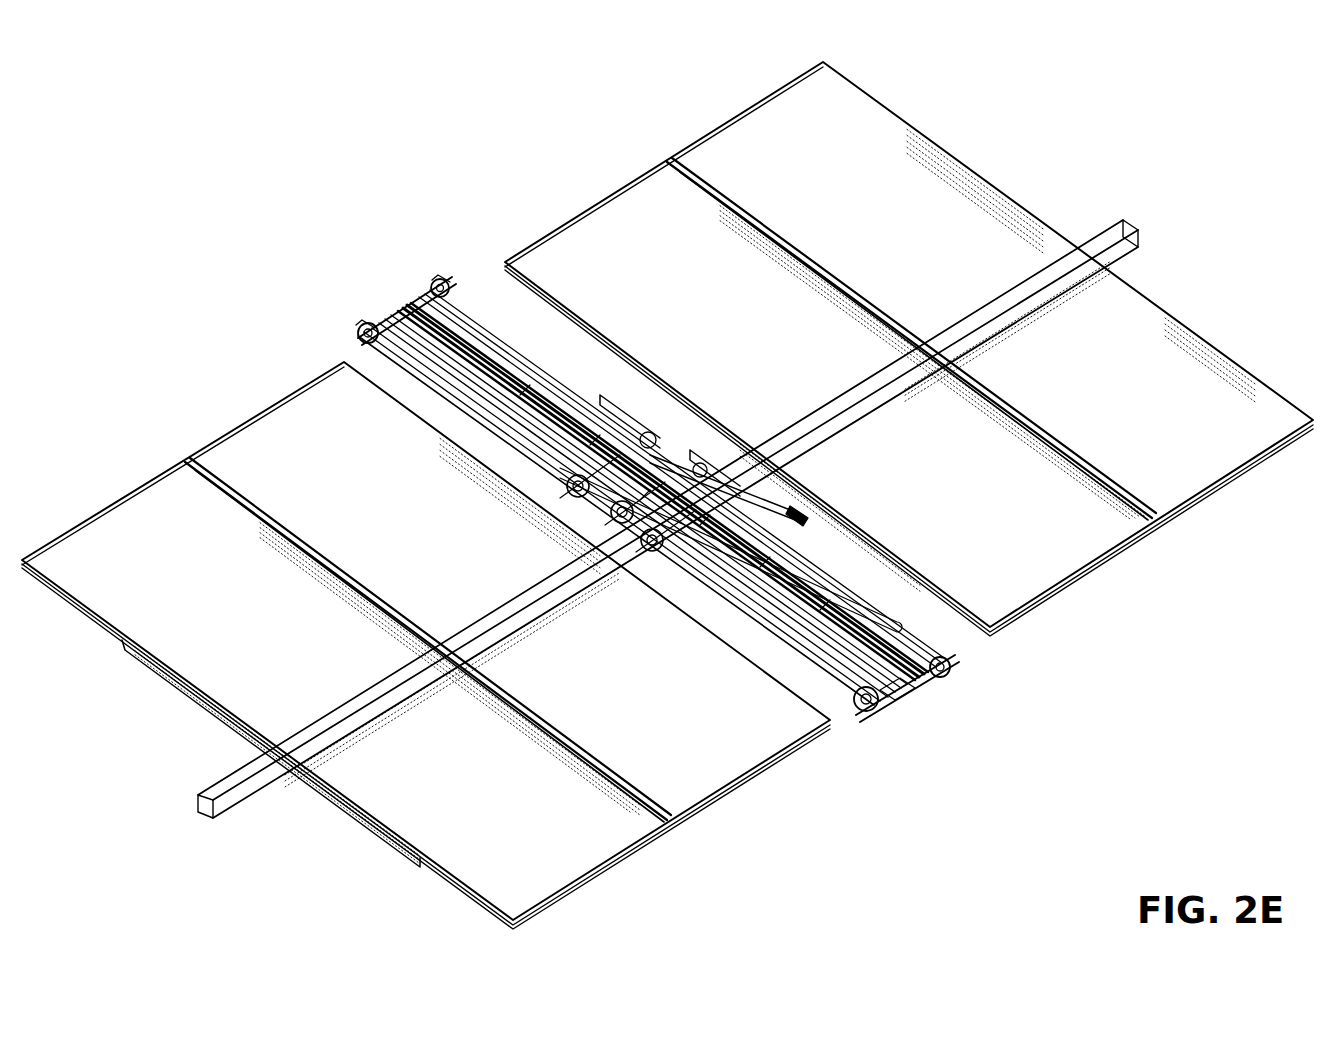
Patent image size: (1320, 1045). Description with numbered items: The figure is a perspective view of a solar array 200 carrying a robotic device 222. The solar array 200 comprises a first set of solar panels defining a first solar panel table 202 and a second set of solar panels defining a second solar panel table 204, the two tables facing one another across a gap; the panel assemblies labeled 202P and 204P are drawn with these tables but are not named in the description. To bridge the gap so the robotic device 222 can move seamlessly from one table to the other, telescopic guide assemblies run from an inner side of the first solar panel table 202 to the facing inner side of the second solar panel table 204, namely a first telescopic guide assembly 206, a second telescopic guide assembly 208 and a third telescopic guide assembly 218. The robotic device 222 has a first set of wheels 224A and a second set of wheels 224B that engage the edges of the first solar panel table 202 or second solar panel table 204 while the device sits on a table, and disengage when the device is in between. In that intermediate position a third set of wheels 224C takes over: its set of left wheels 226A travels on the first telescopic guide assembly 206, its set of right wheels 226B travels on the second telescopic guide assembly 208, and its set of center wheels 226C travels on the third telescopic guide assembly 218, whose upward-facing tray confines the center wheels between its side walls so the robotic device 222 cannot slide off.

The solar array 200 is at (1195, 92).
The first solar panel table 202 is at (419, 640).
The first panel assembly 202P is at (275, 452).
The second solar panel table 204 is at (911, 338).
The second panel assembly 204P is at (633, 226).
The first telescopic guide assembly 206 is at (562, 490).
The second telescopic guide assembly 208 is at (654, 571).
The third telescopic guide assembly 218 is at (594, 511).
The robotic device 222 is at (900, 625).
The first set of wheels 224A is at (356, 301).
The second set of wheels 224B is at (944, 705).
The third set of wheels 224C is at (617, 392).
The set of left wheels 226A is at (648, 430).
The set of right wheels 226B is at (790, 485).
The set of center wheels 226C is at (690, 448).